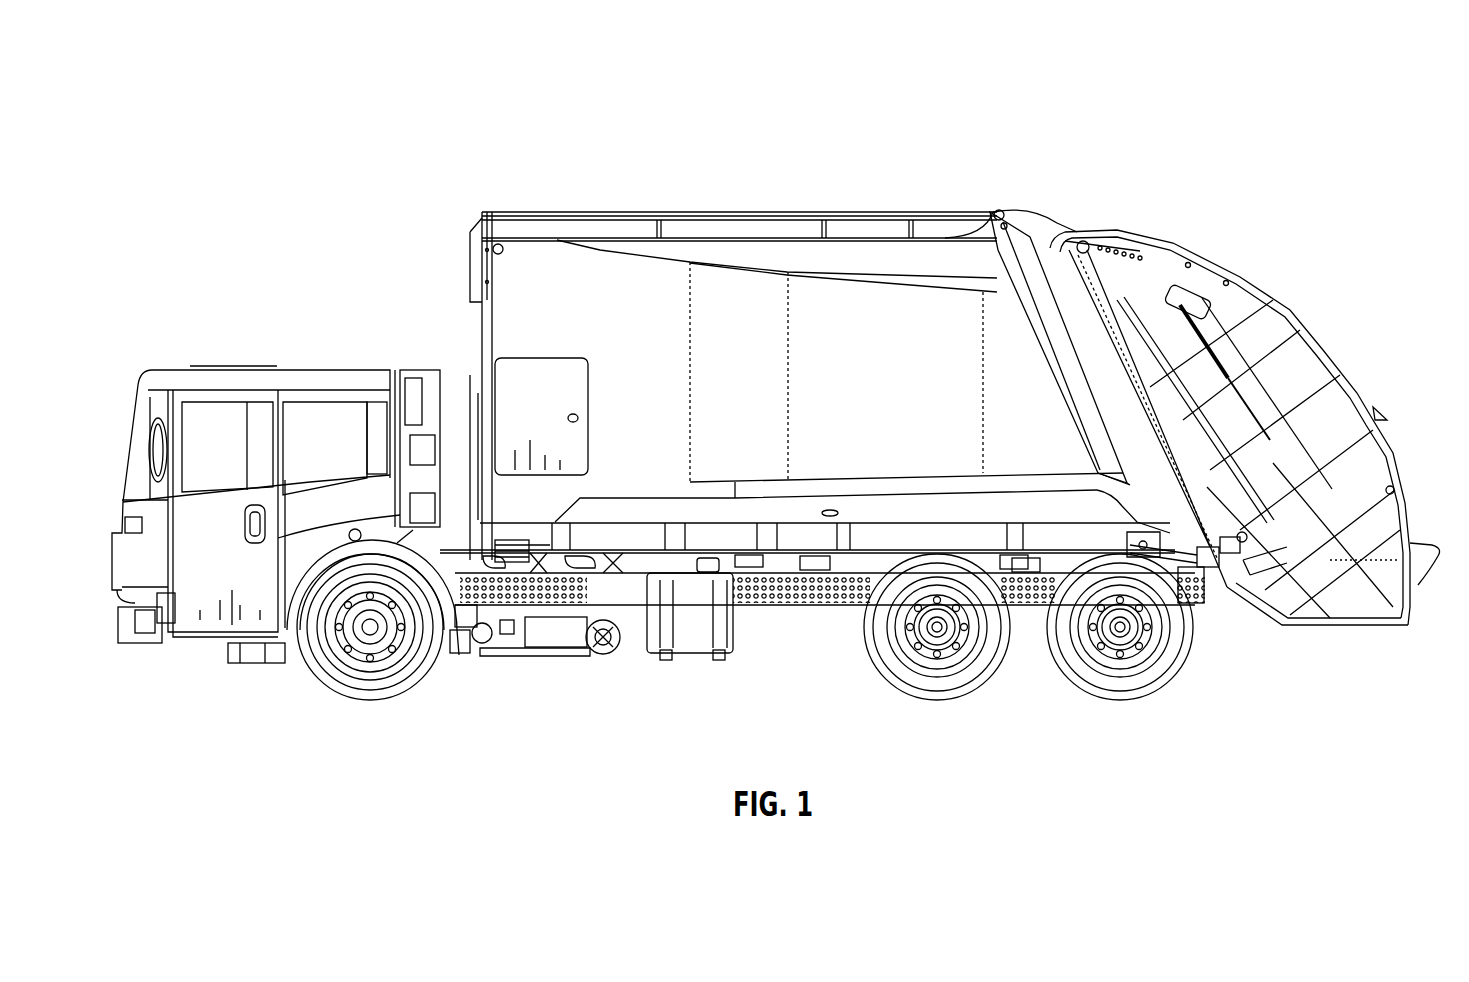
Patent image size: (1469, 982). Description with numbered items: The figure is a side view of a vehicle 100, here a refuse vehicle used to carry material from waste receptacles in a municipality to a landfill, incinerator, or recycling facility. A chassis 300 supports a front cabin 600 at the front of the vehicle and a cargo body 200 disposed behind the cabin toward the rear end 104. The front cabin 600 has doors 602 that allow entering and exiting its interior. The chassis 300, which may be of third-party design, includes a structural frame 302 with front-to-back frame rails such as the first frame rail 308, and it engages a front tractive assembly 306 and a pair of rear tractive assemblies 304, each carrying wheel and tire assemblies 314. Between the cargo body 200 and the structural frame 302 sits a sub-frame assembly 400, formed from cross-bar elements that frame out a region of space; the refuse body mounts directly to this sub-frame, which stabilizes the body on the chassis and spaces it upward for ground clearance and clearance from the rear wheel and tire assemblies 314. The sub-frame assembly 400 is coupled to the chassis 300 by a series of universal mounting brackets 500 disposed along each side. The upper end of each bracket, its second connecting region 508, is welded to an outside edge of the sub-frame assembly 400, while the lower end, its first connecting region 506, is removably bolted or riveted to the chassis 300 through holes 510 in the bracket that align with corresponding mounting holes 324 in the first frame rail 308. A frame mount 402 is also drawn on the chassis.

The vehicle 100 is at (376, 132).
The rear end 104 is at (1380, 394).
The cargo body 200 is at (846, 211).
The chassis 300 is at (780, 618).
The structural frame 302 is at (842, 605).
The rear tractive assemblies 304 is at (878, 684).
The front tractive assemblies 306 is at (310, 682).
The first frame rail 308 is at (808, 560).
The wheel and tire assemblies 314 is at (936, 699).
The mounting holes 324 is at (1010, 560).
The sub-frame assembly 400 is at (600, 655).
The frame mount 402 is at (745, 555).
The universal mounting brackets 500 is at (510, 545).
The first connecting region 506 is at (530, 650).
The second connecting region 508 is at (452, 648).
The holes 510 is at (1025, 560).
The front cabin 600 is at (229, 360).
The doors 602 is at (228, 612).